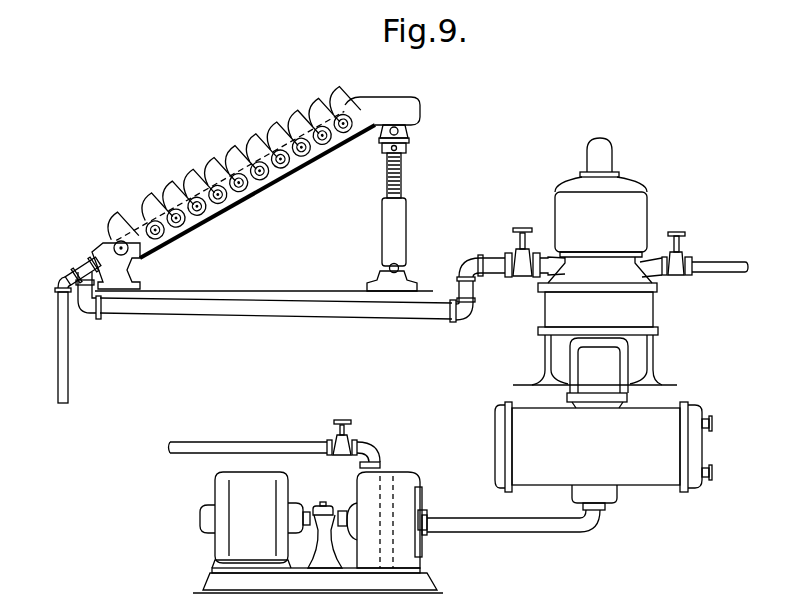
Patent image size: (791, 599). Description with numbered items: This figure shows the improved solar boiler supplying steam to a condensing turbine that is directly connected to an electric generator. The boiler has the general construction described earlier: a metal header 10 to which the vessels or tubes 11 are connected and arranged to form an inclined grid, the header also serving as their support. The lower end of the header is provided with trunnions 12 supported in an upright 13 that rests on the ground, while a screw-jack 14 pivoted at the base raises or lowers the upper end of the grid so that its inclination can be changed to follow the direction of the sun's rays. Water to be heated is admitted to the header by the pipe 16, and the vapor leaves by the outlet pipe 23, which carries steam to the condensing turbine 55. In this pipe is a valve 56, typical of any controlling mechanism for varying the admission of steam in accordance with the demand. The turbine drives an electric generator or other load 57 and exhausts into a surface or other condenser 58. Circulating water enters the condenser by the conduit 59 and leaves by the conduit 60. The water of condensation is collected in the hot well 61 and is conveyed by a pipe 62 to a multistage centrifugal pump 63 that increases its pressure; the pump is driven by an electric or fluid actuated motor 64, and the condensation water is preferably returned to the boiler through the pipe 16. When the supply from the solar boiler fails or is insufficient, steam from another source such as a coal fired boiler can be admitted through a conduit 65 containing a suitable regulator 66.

The metal header 10 is at (415, 110).
The vessels or tubes 11 is at (231, 204).
The trunnions 12 is at (119, 241).
The upright 13 is at (128, 271).
The screw-jack 14 is at (405, 219).
The pipe 16 is at (67, 356).
The outlet pipe 23 is at (310, 309).
The condensing turbine 55 is at (597, 334).
The valve 56 is at (518, 278).
The electric generator 57 is at (600, 210).
The condenser 58 is at (598, 447).
The conduit 59 is at (708, 482).
The conduit 60 is at (708, 418).
The hot well 61 is at (614, 497).
The pipe 62 is at (513, 523).
The multistage centrifugal pump 63 is at (410, 481).
The motor 64 is at (251, 520).
The conduit 65 is at (718, 272).
The regulator 66 is at (677, 254).